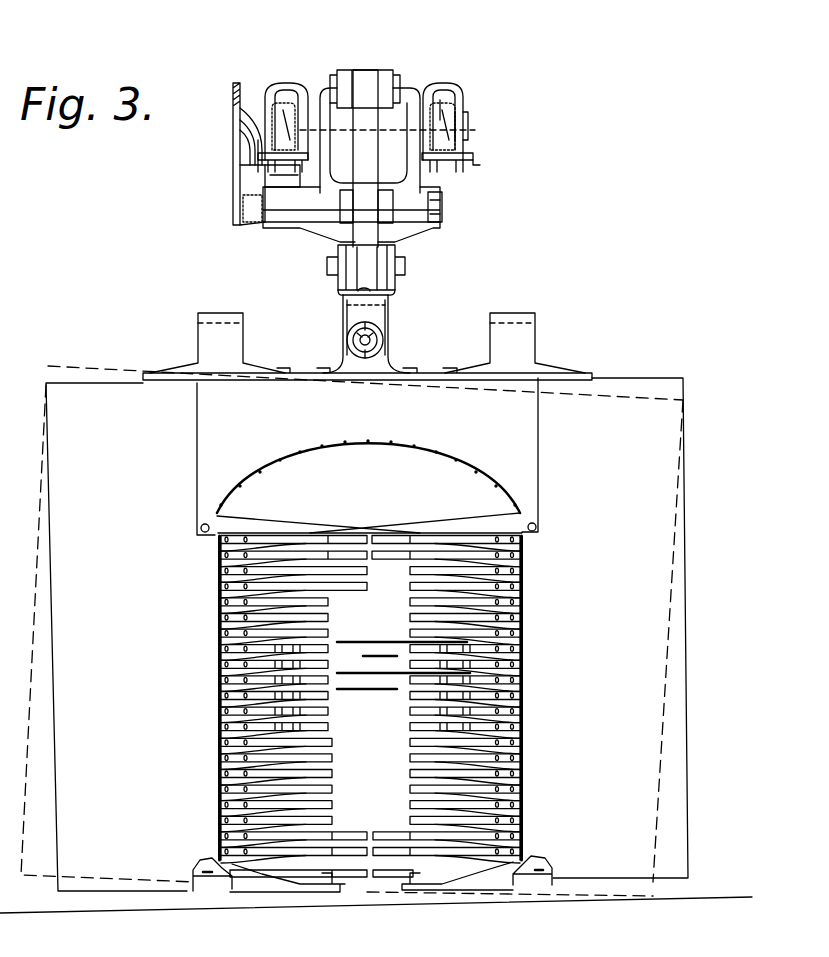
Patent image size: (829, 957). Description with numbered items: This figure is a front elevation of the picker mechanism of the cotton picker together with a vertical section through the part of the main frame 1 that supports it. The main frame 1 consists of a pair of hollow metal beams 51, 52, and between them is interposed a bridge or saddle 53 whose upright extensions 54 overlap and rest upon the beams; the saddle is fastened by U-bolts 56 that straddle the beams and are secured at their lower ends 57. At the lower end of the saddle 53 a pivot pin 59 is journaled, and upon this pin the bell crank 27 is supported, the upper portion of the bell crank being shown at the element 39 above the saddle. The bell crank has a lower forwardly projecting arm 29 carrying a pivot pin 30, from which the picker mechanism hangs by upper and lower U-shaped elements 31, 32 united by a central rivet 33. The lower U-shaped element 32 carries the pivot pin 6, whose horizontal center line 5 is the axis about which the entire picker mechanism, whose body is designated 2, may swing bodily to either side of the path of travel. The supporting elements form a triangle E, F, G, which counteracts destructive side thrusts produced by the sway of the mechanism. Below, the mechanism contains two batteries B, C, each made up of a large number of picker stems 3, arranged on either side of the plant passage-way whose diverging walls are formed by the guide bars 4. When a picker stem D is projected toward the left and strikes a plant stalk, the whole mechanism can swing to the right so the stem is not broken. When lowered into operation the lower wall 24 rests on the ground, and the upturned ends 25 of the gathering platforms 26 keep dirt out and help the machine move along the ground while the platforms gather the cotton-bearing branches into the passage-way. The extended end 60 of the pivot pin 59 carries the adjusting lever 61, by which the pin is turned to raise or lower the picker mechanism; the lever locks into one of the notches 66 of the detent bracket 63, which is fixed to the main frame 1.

The main frame 1 is at (465, 122).
The picker mechanism body 2 is at (685, 473).
The picker stems 3 is at (380, 690).
The guide bars 4 is at (410, 772).
The center line 5 is at (372, 333).
The pivot pin 6 is at (380, 340).
The lower wall 24 is at (100, 912).
The upturned ends 25 is at (205, 885).
The gathering platforms 26 is at (270, 887).
The bell crank 27 is at (378, 65).
The lower forwardly projecting arm 29 is at (420, 228).
The pivot pin 30 is at (408, 270).
The upper U-shaped element 31 is at (343, 290).
The lower U-shaped element 32 is at (340, 318).
The rivet 33 is at (385, 295).
The upper pin 39 is at (340, 70).
The hollow metal beam 51 is at (460, 138).
The hollow metal beam 52 is at (283, 125).
The saddle 53 is at (430, 172).
The upright extensions 54 is at (305, 90).
The U-bolts 56 is at (468, 126).
The lower ends of U-bolts 57 is at (470, 158).
The pivot pin 59 is at (445, 205).
The extended end of pivot pin 60 is at (278, 215).
The adjusting lever 61 is at (238, 112).
The detent bracket 63 is at (242, 220).
The notches 66 is at (244, 188).
The battery of picker stems B is at (480, 640).
The battery of picker stems C is at (235, 662).
The picker stem D is at (372, 637).
The triangle vertex E is at (268, 135).
The triangle vertex F is at (455, 112).
The triangle vertex G is at (350, 345).